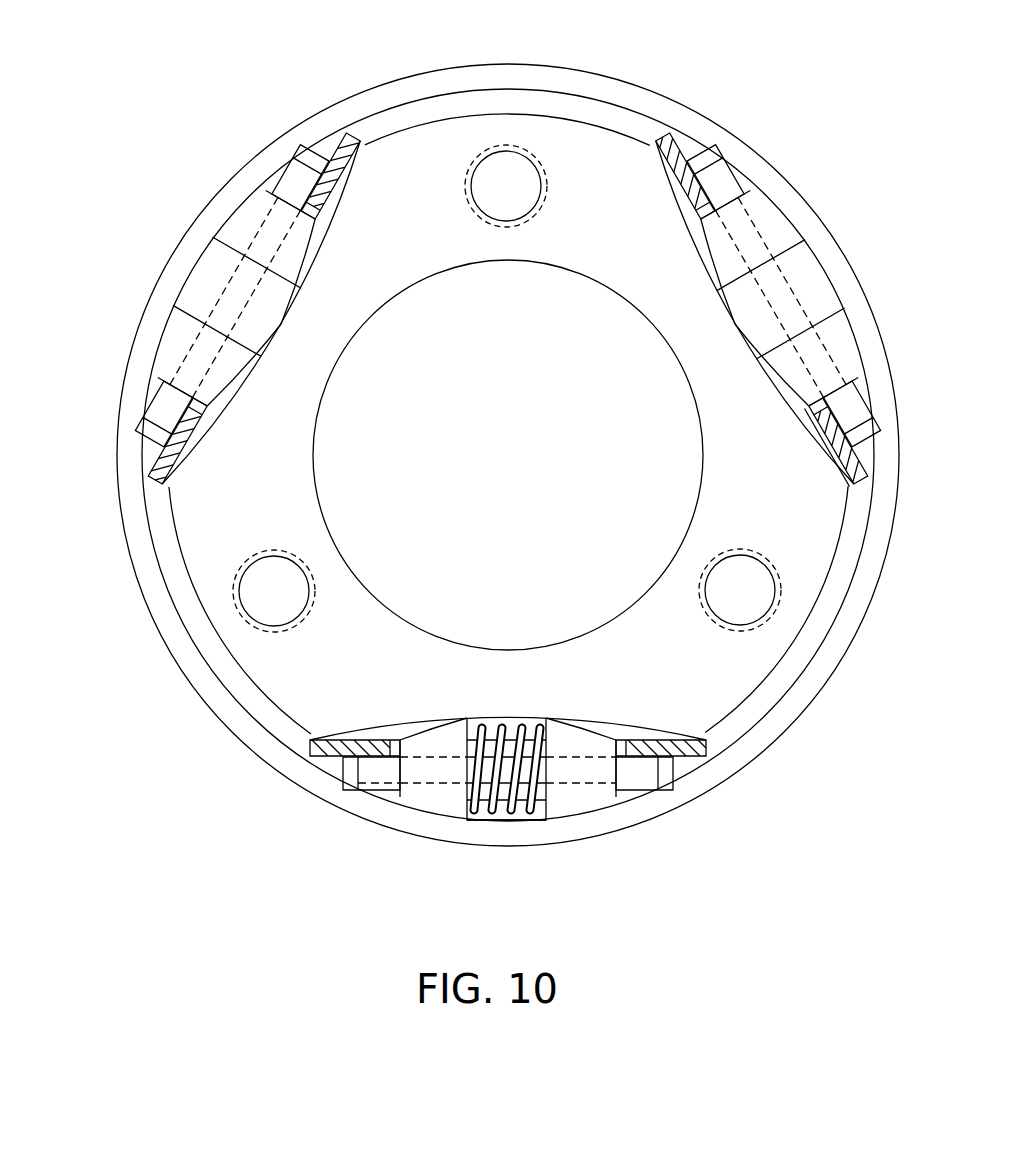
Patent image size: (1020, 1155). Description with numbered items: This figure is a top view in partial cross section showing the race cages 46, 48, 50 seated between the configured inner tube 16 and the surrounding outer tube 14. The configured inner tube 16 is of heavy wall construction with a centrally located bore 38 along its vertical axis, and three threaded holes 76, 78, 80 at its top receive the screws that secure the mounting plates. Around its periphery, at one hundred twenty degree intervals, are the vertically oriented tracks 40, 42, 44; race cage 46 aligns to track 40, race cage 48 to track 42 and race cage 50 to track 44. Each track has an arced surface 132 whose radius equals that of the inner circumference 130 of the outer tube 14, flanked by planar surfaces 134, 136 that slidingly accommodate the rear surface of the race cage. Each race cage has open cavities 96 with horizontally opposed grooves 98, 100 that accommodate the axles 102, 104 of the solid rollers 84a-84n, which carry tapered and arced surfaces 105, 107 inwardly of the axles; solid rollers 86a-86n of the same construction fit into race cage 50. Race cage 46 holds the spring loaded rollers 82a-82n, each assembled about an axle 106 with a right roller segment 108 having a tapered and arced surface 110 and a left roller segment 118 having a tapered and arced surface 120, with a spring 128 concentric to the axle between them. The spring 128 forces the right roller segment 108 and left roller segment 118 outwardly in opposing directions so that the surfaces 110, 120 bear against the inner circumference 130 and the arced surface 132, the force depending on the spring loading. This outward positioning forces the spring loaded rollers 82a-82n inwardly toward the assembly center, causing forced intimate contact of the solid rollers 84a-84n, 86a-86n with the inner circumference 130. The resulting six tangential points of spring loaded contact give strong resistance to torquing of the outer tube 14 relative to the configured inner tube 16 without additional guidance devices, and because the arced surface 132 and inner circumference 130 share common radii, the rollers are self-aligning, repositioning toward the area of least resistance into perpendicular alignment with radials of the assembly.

The outer tube 14 is at (677, 102).
The configured inner tube 16 is at (595, 125).
The centrally located bore 38 is at (518, 463).
The track 40 is at (537, 724).
The track 42 is at (272, 352).
The track 44 is at (717, 310).
The race cage 46 is at (678, 753).
The race cage 48 is at (158, 457).
The race cage 50 is at (685, 152).
The threaded hole 76 is at (248, 622).
The threaded hole 78 is at (492, 150).
The threaded hole 80 is at (760, 625).
The spring loaded rollers 82a-82n is at (448, 812).
The solid rollers 84a-84n is at (228, 222).
The solid rollers 86a-86n is at (785, 226).
The open cavities 96 is at (392, 795).
The groove 98 is at (353, 768).
The groove 100 is at (658, 765).
The axle 102 is at (300, 187).
The axle 104 is at (165, 430).
The tapered and arced surface 105 is at (308, 250).
The axle 106 is at (378, 772).
The tapered and arced surface 107 is at (233, 382).
The right roller segment 108 is at (572, 727).
The tapered and arced surface 110 is at (580, 808).
The left roller segment 118 is at (445, 728).
The tapered and arced surface 120 is at (425, 805).
The spring 128 is at (503, 733).
The inner circumference 130 is at (522, 822).
The arced surface 132 is at (529, 716).
The planar surface 134 is at (670, 735).
The planar surface 136 is at (372, 737).